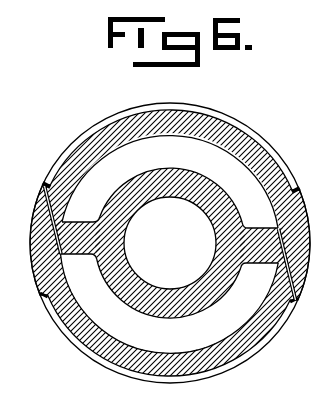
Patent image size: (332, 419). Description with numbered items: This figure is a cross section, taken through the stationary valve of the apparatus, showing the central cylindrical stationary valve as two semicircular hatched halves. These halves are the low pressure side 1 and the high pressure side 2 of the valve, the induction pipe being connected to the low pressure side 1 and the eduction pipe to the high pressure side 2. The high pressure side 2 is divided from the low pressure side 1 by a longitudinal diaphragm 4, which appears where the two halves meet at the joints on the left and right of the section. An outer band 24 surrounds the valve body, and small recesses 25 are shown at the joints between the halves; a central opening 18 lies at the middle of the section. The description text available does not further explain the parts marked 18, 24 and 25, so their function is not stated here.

The low pressure side 1 is at (170, 260).
The high pressure side 2 is at (170, 243).
The longitudinal diaphragm 4 is at (101, 270).
The shaft opening 18 is at (170, 243).
The outer shell 24 is at (182, 96).
The notch 25 is at (56, 203).